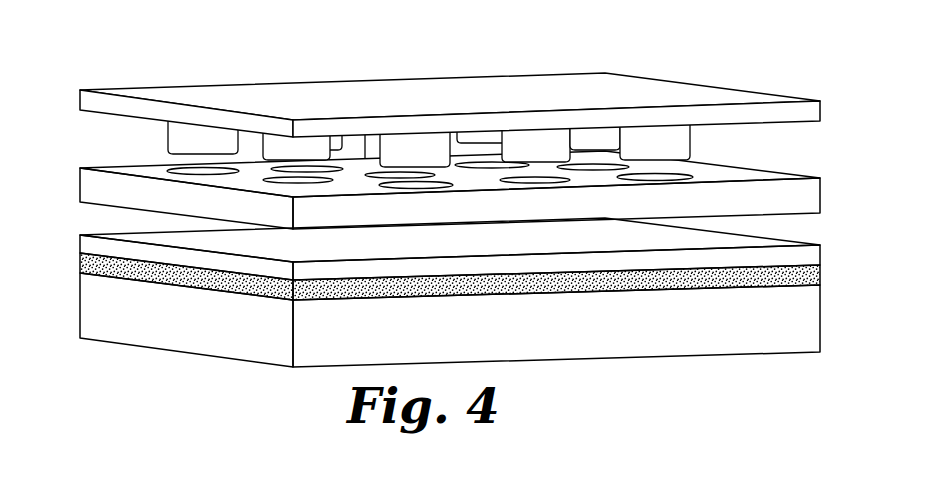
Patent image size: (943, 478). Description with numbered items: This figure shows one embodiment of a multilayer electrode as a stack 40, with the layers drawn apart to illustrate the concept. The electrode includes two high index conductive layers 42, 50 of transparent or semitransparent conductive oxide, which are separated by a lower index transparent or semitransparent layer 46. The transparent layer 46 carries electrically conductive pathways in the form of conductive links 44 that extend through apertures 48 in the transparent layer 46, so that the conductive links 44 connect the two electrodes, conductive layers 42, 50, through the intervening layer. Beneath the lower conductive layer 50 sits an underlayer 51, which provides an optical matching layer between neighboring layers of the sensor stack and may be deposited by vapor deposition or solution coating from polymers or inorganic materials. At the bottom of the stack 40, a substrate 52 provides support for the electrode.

The stack 40 is at (271, 46).
The high index conductive layer 42 is at (92, 102).
The conductive links 44 is at (185, 137).
The transparent layer 46 is at (92, 182).
The apertures 48 is at (687, 178).
The high index conductive layer 50 is at (92, 245).
The underlayer 51 is at (92, 263).
The substrate 52 is at (92, 320).